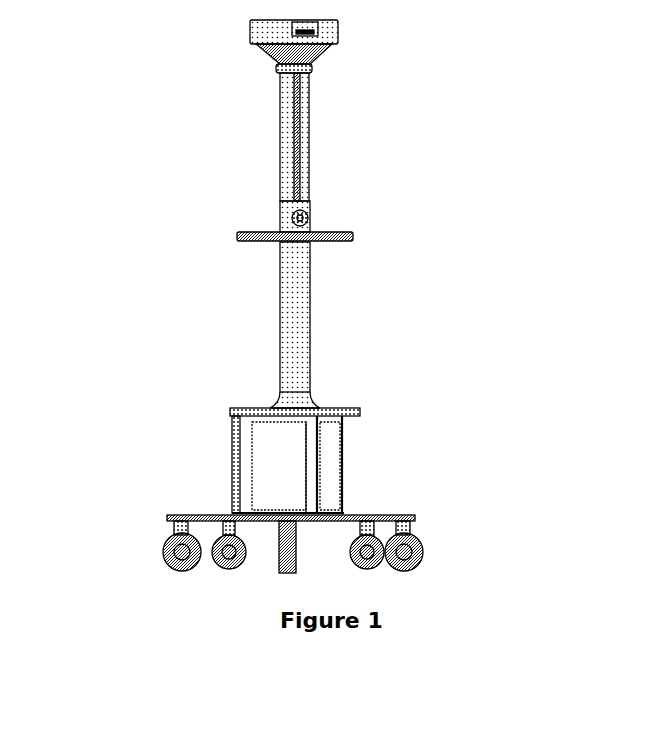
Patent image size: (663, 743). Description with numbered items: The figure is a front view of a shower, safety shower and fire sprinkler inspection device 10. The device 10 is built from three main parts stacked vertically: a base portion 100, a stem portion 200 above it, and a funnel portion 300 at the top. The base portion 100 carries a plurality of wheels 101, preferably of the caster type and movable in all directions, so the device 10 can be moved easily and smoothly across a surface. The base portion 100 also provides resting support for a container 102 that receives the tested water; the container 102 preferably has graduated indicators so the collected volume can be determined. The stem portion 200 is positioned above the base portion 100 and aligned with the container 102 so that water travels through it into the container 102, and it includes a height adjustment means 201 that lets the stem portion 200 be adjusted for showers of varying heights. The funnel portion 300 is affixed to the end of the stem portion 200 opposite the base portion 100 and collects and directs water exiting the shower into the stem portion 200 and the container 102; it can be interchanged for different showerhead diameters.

The device 10 is at (122, 176).
The base portion 100 is at (345, 512).
The wheels 101 is at (420, 543).
The container 102 is at (342, 472).
The stem portion 200 is at (298, 279).
The height adjustment means 201 is at (304, 221).
The funnel portion 300 is at (334, 38).